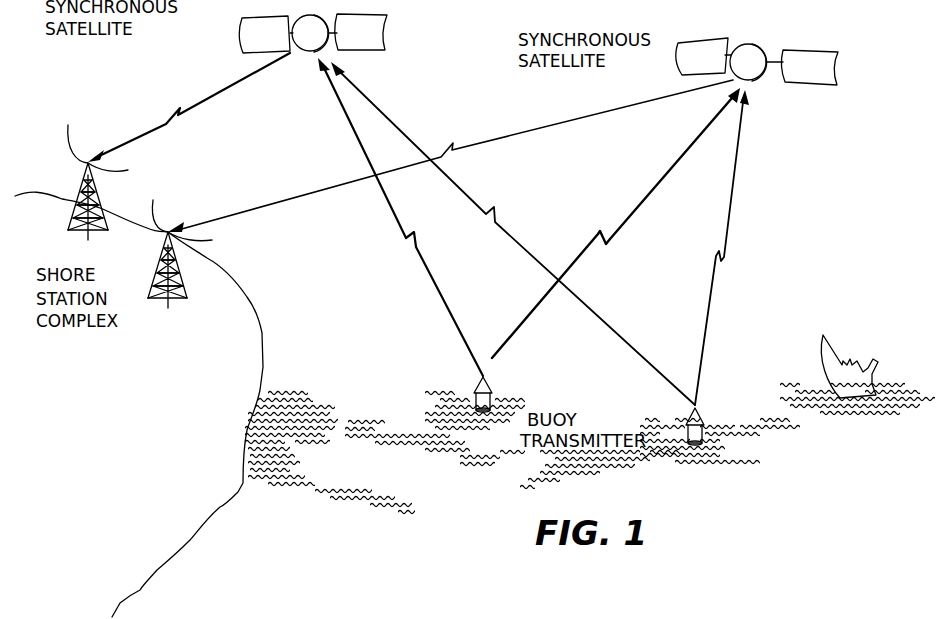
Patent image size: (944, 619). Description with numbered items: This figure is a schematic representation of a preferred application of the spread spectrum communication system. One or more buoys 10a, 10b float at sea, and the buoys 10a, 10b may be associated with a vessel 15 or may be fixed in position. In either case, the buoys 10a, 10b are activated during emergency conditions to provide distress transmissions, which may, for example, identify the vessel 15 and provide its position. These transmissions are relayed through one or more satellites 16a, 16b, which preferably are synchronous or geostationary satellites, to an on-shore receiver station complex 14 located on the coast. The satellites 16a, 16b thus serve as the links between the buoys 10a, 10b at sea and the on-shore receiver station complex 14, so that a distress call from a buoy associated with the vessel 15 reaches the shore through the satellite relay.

The satellite 16a is at (303, 52).
The satellite 16b is at (758, 76).
The on-shore receiver station complex 14 is at (141, 312).
The buoy 10a is at (476, 397).
The buoy 10b is at (705, 430).
The vessel 15 is at (842, 362).